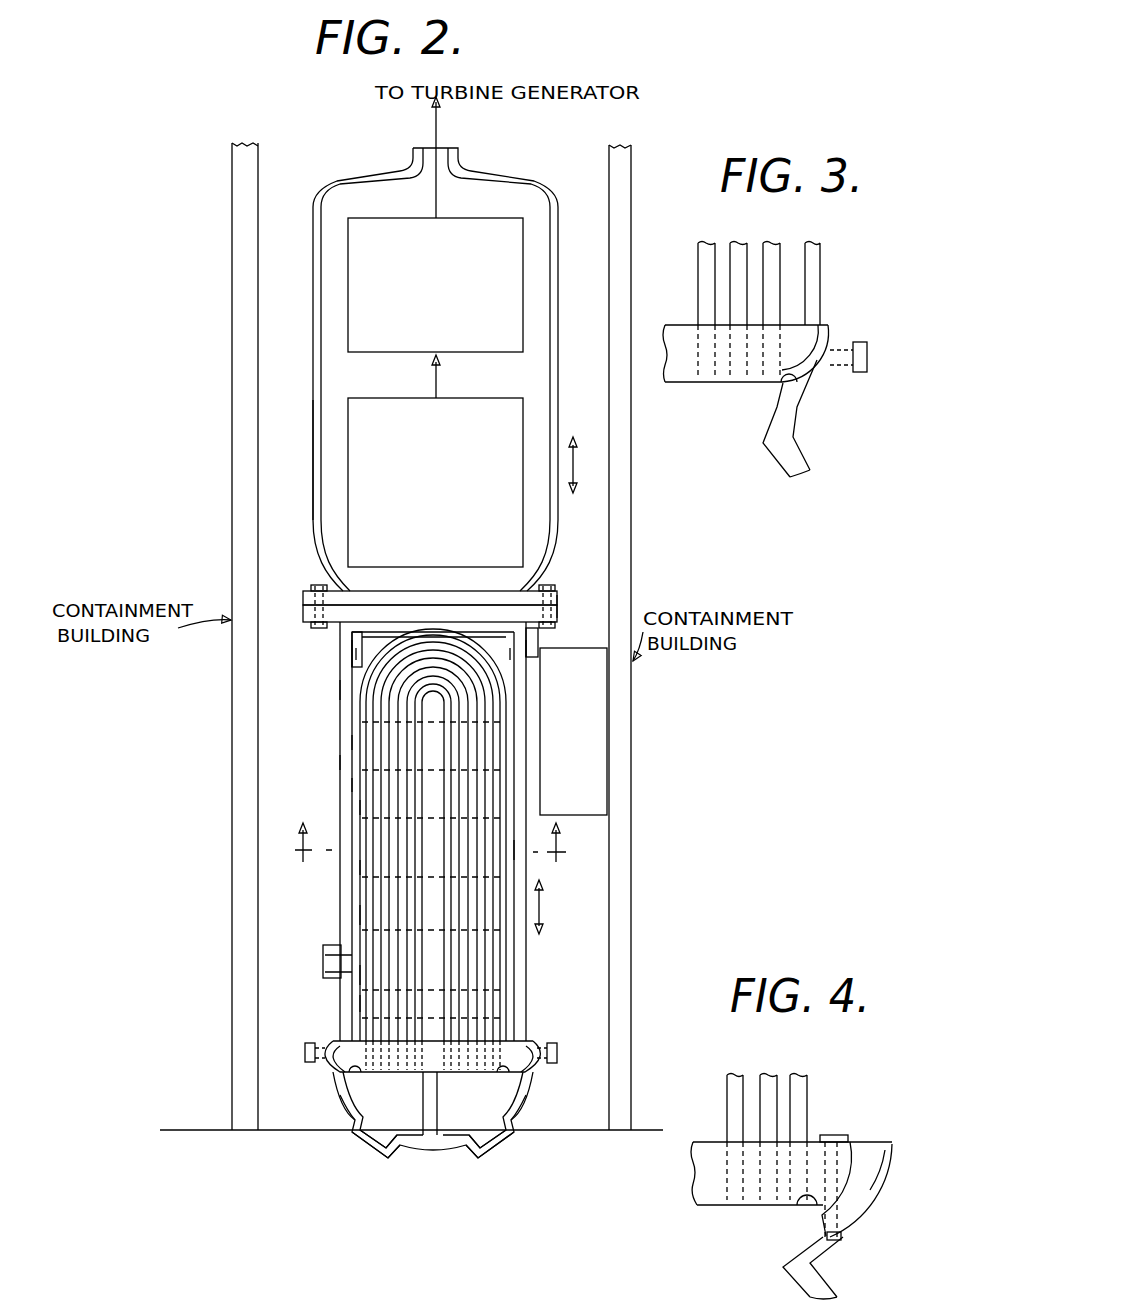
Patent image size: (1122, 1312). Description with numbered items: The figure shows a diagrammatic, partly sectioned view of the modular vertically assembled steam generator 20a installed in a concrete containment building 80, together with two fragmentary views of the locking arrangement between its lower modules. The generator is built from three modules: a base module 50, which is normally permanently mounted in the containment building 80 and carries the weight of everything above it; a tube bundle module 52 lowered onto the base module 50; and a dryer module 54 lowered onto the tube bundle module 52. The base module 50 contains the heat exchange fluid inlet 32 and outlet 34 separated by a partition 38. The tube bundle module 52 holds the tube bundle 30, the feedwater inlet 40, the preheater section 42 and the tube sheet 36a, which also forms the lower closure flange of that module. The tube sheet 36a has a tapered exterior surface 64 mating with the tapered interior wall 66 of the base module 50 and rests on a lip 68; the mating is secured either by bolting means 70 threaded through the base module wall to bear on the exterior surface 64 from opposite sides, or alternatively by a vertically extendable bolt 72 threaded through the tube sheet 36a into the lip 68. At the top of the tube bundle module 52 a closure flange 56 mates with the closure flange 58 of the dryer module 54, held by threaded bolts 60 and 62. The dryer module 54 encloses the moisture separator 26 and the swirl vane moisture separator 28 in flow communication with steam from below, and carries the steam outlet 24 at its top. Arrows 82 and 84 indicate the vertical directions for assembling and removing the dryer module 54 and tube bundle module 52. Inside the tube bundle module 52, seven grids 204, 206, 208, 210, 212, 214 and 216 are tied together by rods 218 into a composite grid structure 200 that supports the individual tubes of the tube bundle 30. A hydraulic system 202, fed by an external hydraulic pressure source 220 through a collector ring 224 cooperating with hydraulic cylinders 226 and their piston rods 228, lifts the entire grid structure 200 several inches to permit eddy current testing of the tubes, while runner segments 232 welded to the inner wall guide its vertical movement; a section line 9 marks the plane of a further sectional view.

In FIG. 2, the section line 9- 9 is at (435, 842).
In FIG. 2, the modular steam generator 20a is at (306, 548).
In FIG. 2, the steam outlet 24 is at (458, 150).
In FIG. 2, the moisture separator 26 is at (527, 240).
In FIG. 2, the swirl vane moisture separator 28 is at (469, 396).
In FIG. 2, the tube bundle 30 is at (373, 873).
In FIG. 3, the tube bundle 30 is at (786, 250).
In FIG. 4, the tube bundle 30 is at (771, 1075).
In FIG. 2, the heat exchange fluid inlet 32 is at (365, 1214).
In FIG. 2, the heat exchange fluid outlet 34 is at (483, 1142).
In FIG. 2, the tube sheet 36a is at (531, 1041).
In FIG. 3, the tube sheet 36a is at (791, 322).
In FIG. 4, the tube sheet 36a is at (813, 1140).
In FIG. 2, the partition 38 is at (421, 1102).
In FIG. 2, the feedwater inlet 40 is at (190, 962).
In FIG. 2, the preheater section 42 is at (466, 975).
In FIG. 2, the base module 50 is at (341, 1106).
In FIG. 4, the base module 50 is at (886, 1154).
In FIG. 2, the tube bundle module 52 is at (331, 722).
In FIG. 2, the dryer module 54 is at (309, 268).
In FIG. 2, the closure flange 56 is at (338, 642).
In FIG. 2, the closure flange 58 is at (336, 584).
In FIG. 2, the threaded bolt 60 is at (563, 583).
In FIG. 2, the threaded bolt 62 is at (326, 622).
In FIG. 2, the exterior surface of tube sheet 64 is at (326, 1068).
In FIG. 3, the exterior surface of tube sheet 64 is at (823, 369).
In FIG. 4, the exterior surface of tube sheet 64 is at (863, 1190).
In FIG. 2, the interior wall of base module 66 is at (344, 1100).
In FIG. 3, the interior wall of base module 66 is at (806, 396).
In FIG. 4, the interior wall of base module 66 is at (876, 1142).
In FIG. 2, the lip 68 is at (360, 1079).
In FIG. 3, the lip 68 is at (784, 377).
In FIG. 4, the lip 68 is at (801, 1210).
In FIG. 2, the threadable bolting means 70 is at (303, 1051).
In FIG. 3, the threadable bolting means 70 is at (868, 355).
In FIG. 4, the vertically extendable bolt 72 is at (833, 1134).
In FIG. 2, the containment building 80 is at (233, 186).
In FIG. 2, the arrow 82 is at (577, 466).
In FIG. 2, the arrow 84 is at (543, 914).
In FIG. 2, the grid structure arrangement 200 is at (346, 762).
In FIG. 2, the hydraulic system 202 is at (347, 692).
In FIG. 2, the grid 204 is at (353, 742).
In FIG. 2, the grid 206 is at (356, 784).
In FIG. 2, the grid 208 is at (373, 808).
In FIG. 2, the grid 210 is at (372, 868).
In FIG. 2, the grid 212 is at (372, 919).
In FIG. 2, the grid 214 is at (372, 976).
In FIG. 2, the grid 216 is at (372, 1004).
In FIG. 2, the rod 218 is at (518, 854).
In FIG. 2, the hydraulic pressure source 220 is at (612, 712).
In FIG. 2, the collector ring 224 is at (557, 599).
In FIG. 2, the hydraulic cylinder 226 is at (352, 652).
In FIG. 2, the piston rod 228 is at (345, 690).
In FIG. 2, the runner segment 232 is at (347, 773).